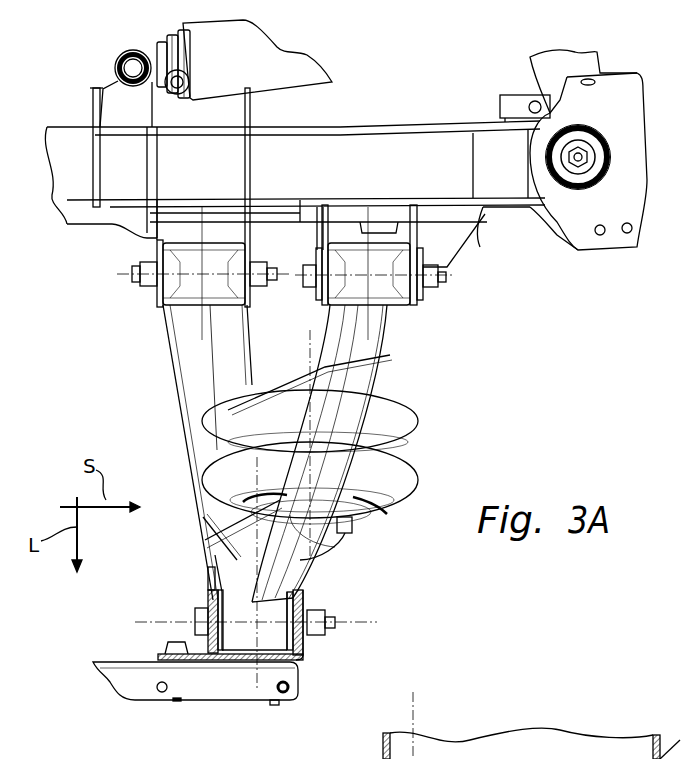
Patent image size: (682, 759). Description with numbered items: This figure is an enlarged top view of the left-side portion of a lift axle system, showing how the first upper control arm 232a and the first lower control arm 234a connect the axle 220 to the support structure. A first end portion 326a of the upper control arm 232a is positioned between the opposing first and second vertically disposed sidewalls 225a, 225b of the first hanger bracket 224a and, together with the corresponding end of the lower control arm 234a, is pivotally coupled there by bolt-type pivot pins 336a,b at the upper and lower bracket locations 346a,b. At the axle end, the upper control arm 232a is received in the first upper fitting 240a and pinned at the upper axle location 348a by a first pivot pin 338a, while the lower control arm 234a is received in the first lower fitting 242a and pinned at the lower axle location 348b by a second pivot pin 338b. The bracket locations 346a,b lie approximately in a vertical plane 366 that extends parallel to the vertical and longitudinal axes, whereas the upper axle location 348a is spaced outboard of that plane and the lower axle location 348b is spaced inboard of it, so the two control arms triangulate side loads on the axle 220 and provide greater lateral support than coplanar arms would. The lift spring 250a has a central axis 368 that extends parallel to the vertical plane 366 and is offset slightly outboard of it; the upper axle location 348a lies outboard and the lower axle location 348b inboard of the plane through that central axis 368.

The axle 220 is at (99, 230).
The lower axle location 348b is at (202, 273).
The upper axle location 348a is at (370, 273).
The first lower fitting 242a is at (150, 298).
The second pivot pin 338b is at (138, 283).
The first pivot pin 338a is at (446, 278).
The first upper fitting 240a is at (512, 254).
The first lower control arm 234a is at (173, 363).
The first upper control arm 232a is at (385, 366).
The lift spring 250a is at (415, 446).
The vertical plane 366 is at (207, 552).
The central axis 368 is at (313, 583).
The second vertically disposed sidewall 225b is at (204, 650).
The pivot pins 336a,b is at (338, 638).
The upper and lower bracket locations 346a,b is at (258, 585).
The first vertically disposed sidewall 225a is at (307, 654).
The first hanger bracket 224a is at (305, 665).
The first end portion 326a is at (467, 752).